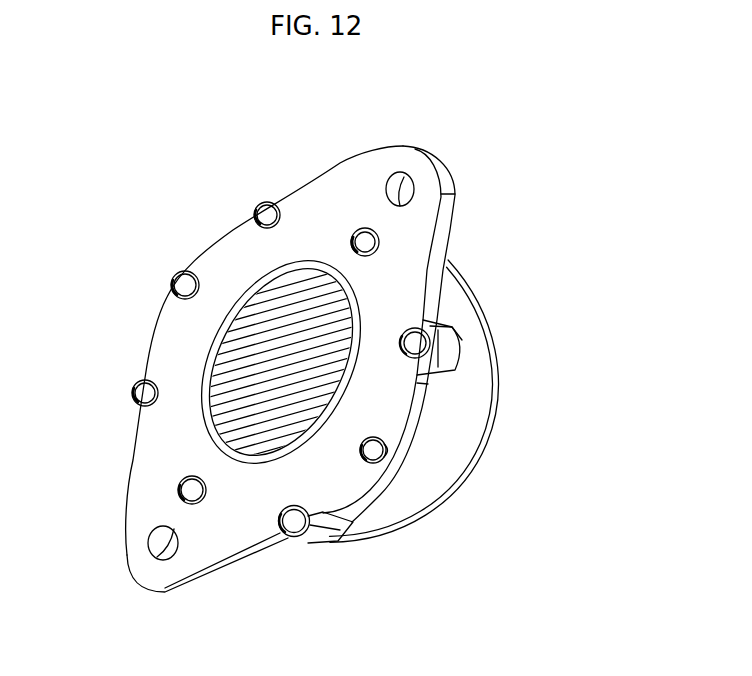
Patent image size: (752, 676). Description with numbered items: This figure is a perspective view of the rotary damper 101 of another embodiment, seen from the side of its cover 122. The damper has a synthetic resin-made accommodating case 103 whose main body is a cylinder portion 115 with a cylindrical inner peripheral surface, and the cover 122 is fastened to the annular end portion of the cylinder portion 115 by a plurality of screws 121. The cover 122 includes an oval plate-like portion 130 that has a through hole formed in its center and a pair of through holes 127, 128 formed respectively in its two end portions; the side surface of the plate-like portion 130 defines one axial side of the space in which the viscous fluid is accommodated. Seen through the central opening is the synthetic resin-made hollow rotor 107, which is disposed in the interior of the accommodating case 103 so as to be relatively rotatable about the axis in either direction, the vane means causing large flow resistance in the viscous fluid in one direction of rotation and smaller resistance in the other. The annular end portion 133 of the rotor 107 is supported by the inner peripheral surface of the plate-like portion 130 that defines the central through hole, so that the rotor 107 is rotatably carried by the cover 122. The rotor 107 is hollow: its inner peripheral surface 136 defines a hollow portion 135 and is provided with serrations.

The rotary damper 101 is at (474, 261).
The accommodating case 103 is at (504, 358).
The rotor 107 is at (352, 326).
The cylinder portion 115 is at (432, 470).
The screws 121 is at (267, 213).
The cover 122 is at (130, 443).
The through hole 127 is at (167, 547).
The through hole 128 is at (403, 190).
The plate-like portion 130 is at (227, 267).
The annular end portion 133 is at (220, 333).
The hollow portion 135 is at (300, 388).
The inner peripheral surface 136 is at (294, 333).